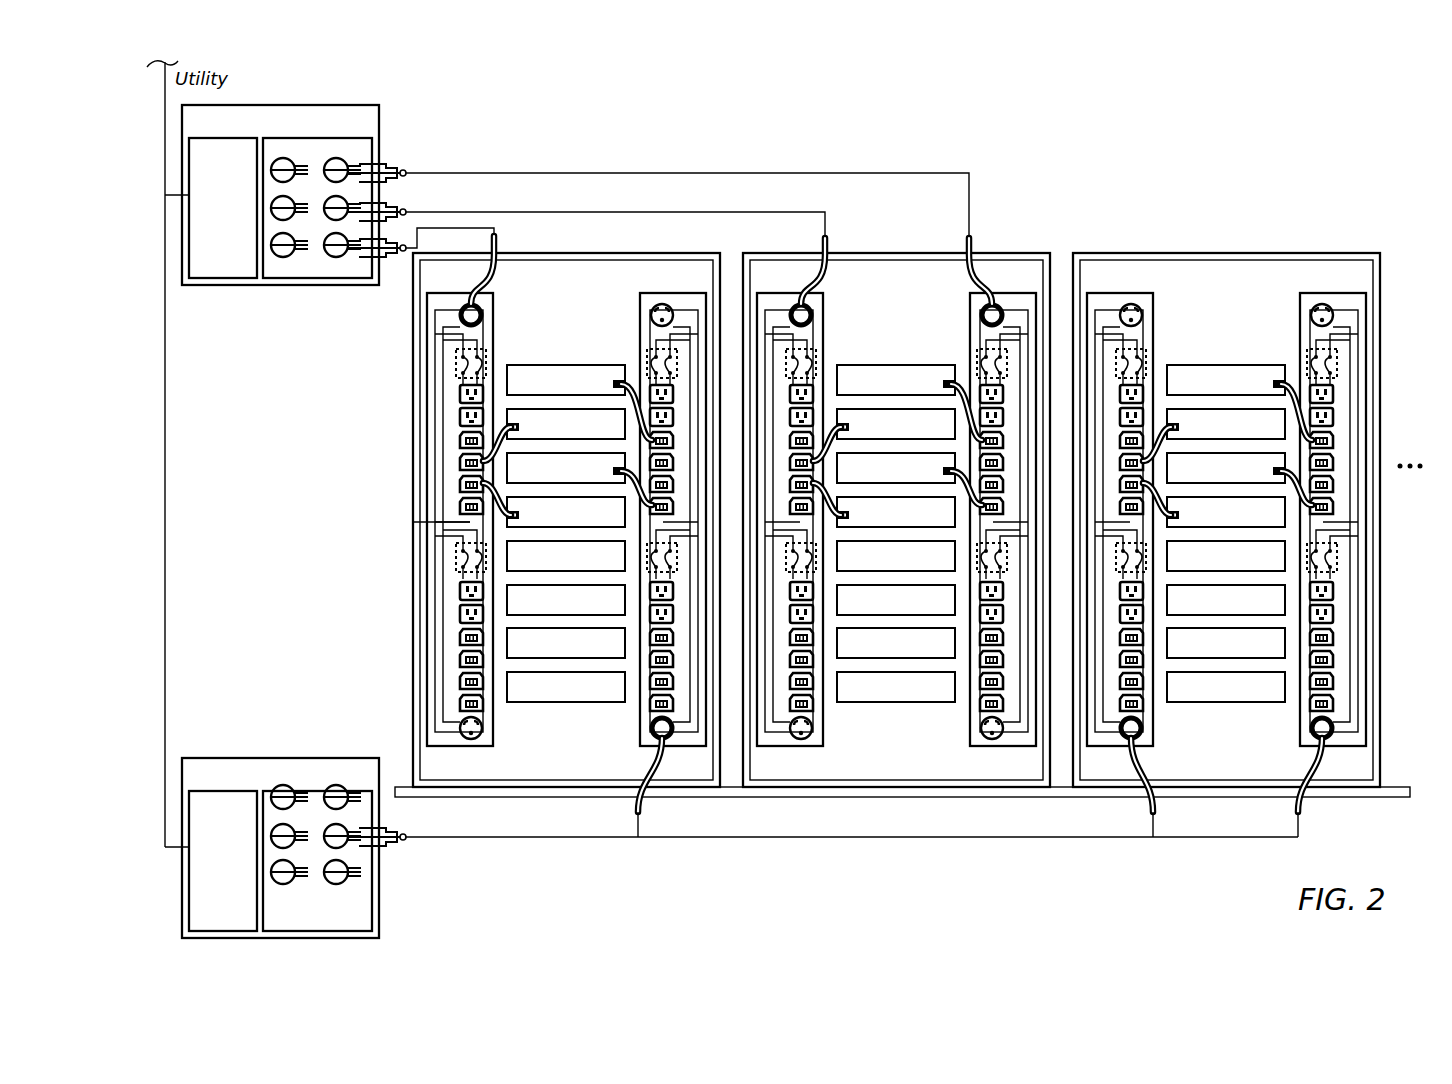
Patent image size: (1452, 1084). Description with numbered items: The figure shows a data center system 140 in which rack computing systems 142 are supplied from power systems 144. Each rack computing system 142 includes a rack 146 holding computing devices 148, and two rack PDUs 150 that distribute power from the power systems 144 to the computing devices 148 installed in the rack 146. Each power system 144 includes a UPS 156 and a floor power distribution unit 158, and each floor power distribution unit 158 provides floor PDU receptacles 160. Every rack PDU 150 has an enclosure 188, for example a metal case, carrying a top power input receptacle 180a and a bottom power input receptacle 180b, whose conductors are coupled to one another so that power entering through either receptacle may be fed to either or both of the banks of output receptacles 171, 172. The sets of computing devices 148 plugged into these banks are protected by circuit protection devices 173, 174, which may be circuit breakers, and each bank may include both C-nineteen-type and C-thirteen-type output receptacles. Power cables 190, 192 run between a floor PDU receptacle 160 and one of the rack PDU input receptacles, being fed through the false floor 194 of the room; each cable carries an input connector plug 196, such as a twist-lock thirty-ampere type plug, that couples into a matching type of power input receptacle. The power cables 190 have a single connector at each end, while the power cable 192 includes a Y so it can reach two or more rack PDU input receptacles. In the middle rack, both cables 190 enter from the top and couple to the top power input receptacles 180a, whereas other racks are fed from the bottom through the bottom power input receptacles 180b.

The system 140 is at (863, 484).
The rack computing system 142 is at (1304, 246).
The power system 144 is at (340, 131).
The rack 146 is at (413, 523).
The computing device 148 is at (586, 393).
The rack PDU 150 is at (452, 530).
The UPS 156 is at (242, 856).
The floor power distribution unit 158 is at (356, 272).
The floor PDU receptacle 160 is at (284, 258).
The bank of output receptacles 171 is at (451, 427).
The bank of output receptacles 172 is at (420, 627).
The circuit protection device 173 is at (487, 355).
The circuit protection device 174 is at (420, 561).
The top power input receptacle 180a is at (483, 313).
The bottom power input receptacle 180b is at (483, 728).
The enclosure 188 is at (463, 747).
The power cable 190 is at (717, 173).
The power cable 192 is at (795, 837).
The false floor 194 is at (1357, 797).
The input connector plug 196 is at (466, 306).